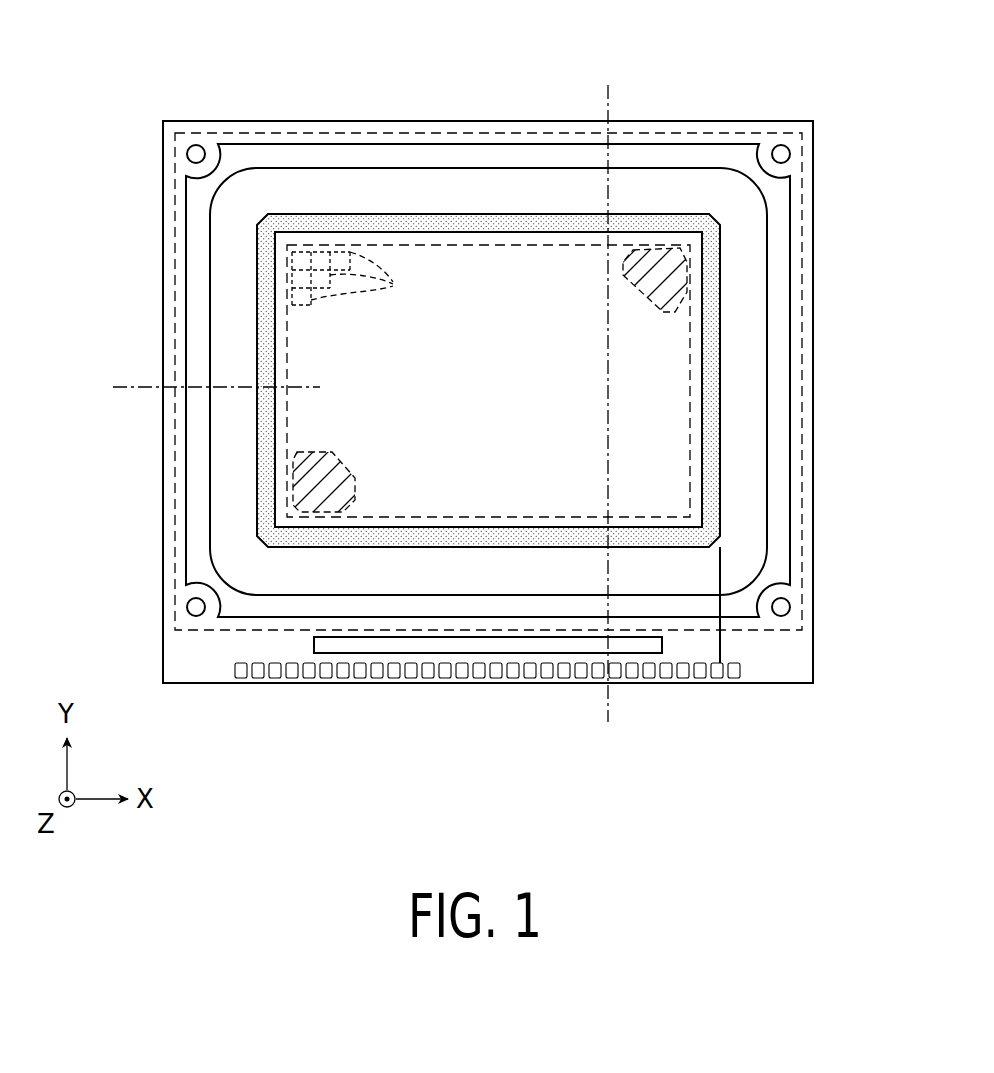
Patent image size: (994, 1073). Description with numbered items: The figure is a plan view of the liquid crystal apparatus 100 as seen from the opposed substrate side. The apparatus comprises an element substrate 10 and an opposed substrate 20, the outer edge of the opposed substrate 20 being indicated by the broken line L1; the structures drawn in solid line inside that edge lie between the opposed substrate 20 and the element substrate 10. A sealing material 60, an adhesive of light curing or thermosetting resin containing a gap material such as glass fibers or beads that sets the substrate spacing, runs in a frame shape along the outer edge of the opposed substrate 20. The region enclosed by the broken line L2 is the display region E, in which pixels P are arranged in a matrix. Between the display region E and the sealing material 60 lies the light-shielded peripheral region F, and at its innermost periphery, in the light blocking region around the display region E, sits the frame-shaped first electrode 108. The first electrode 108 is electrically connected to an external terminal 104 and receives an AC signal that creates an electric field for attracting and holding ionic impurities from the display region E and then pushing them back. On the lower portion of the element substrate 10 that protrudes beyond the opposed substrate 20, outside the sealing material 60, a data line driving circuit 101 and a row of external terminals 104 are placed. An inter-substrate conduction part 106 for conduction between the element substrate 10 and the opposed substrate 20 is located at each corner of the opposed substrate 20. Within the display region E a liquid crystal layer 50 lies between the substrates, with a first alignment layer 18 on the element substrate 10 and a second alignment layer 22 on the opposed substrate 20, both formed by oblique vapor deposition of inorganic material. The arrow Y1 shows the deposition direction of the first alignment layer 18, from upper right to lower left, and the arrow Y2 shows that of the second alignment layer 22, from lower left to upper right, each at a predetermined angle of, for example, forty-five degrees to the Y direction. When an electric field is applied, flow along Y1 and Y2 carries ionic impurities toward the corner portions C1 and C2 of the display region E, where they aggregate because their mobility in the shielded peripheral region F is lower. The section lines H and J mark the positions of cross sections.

The liquid crystal apparatus 100 is at (864, 43).
The element substrate 10 is at (780, 683).
The opposed substrate 20 is at (796, 320).
The sealing material 60 is at (778, 357).
The liquid crystal layer 50 is at (470, 262).
The first alignment layer 18 is at (488, 358).
The second alignment layer 22 is at (488, 358).
The first electrode 108 is at (488, 380).
The inter-substrate conduction part 106 is at (196, 154).
The data line driving circuit 101 is at (347, 653).
The external terminal 104 is at (409, 678).
The broken line L1 is at (805, 200).
The broken line L2 is at (690, 460).
The display region E is at (663, 403).
The peripheral region F is at (743, 520).
The corner portion C1 is at (300, 482).
The corner portion C2 is at (665, 283).
The pixel P is at (386, 284).
The arrow Y1 is at (593, 357).
The arrow Y2 is at (362, 415).
The section line H-H' H is at (608, 88).
The section line J-J' J is at (127, 387).